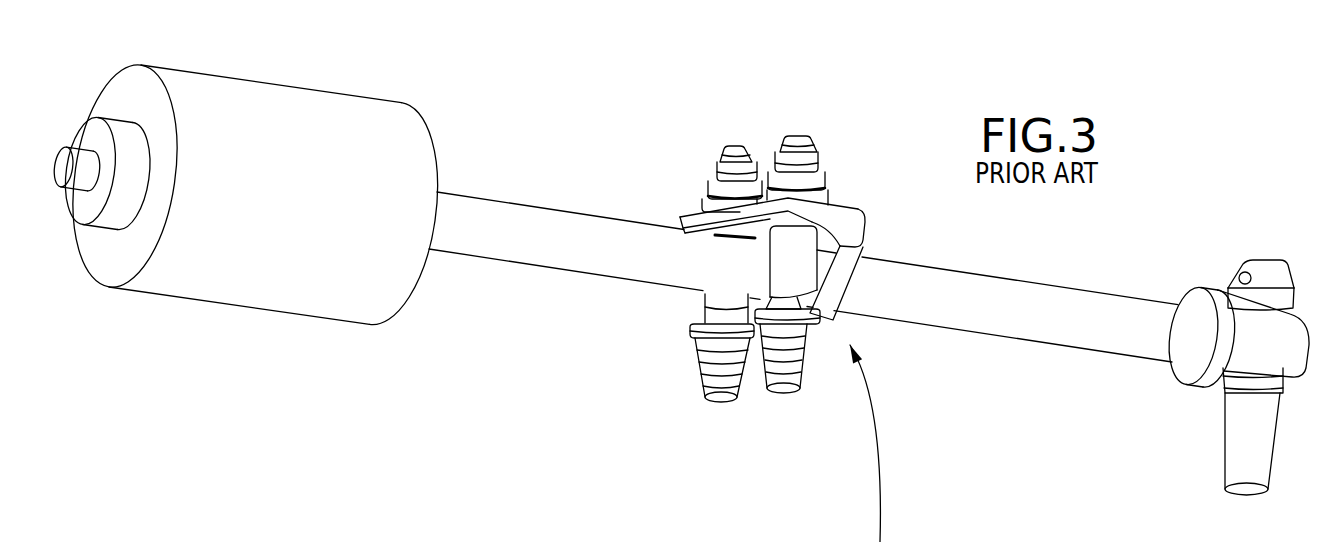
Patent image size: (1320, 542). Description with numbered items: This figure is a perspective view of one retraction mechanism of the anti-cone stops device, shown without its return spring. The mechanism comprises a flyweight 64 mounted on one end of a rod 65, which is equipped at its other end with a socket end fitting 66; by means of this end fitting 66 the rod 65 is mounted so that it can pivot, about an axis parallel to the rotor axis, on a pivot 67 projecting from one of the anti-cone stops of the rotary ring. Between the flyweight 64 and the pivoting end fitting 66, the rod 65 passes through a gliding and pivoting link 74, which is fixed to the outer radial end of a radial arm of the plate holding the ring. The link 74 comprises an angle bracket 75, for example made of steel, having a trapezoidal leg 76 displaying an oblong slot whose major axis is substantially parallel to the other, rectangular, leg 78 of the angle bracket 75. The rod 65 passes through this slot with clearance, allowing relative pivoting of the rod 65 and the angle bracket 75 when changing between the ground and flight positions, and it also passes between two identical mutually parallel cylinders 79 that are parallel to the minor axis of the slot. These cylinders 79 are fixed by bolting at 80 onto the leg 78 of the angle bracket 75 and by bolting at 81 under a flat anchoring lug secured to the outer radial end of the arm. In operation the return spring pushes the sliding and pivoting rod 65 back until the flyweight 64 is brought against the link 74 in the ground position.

The flyweight 64 is at (227, 275).
The rod 65 is at (575, 253).
The socket end fitting 66 is at (1240, 342).
The pivot 67 is at (1253, 302).
The gliding and pivoting link 74 is at (777, 272).
The angle bracket 75 is at (853, 220).
The trapezoidal leg 76 is at (835, 287).
The rectangular leg 78 is at (700, 218).
The cylinders 79 is at (793, 262).
The bolting 80 is at (728, 170).
The bolting 81 is at (708, 349).